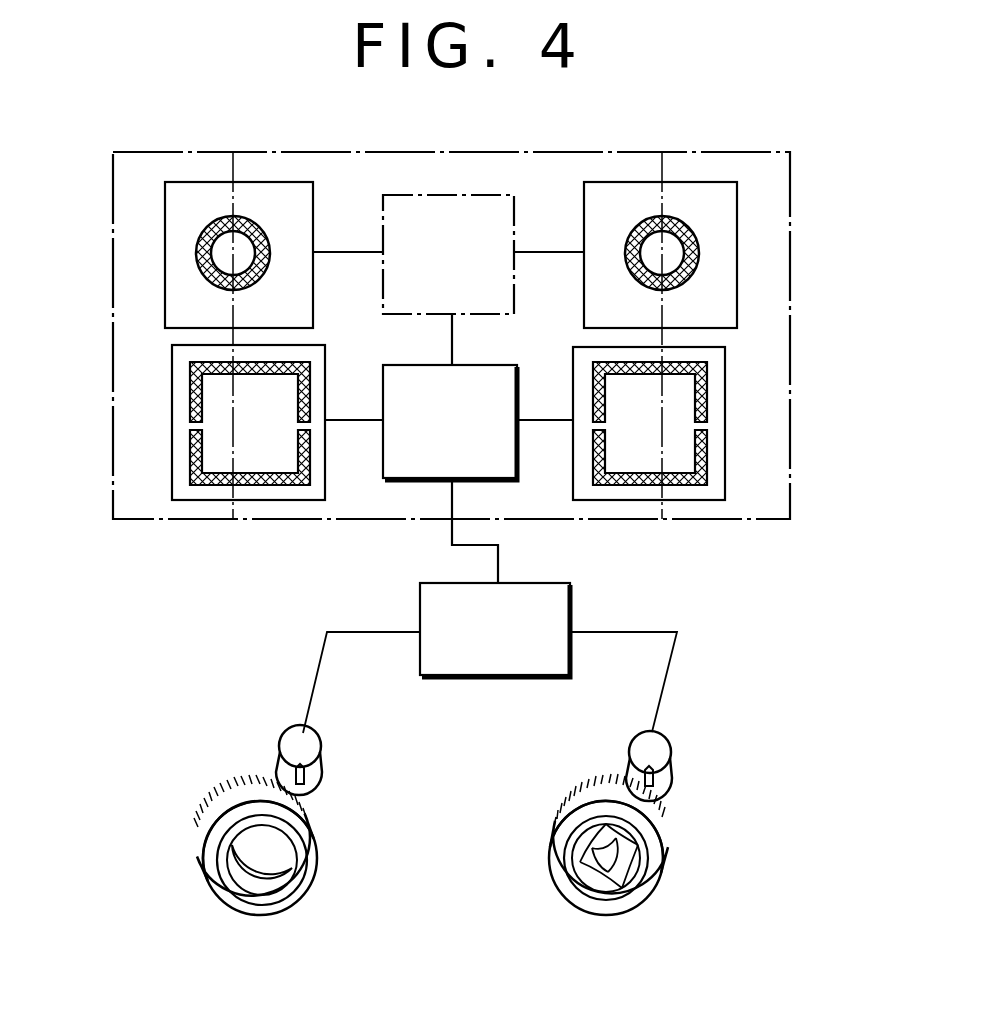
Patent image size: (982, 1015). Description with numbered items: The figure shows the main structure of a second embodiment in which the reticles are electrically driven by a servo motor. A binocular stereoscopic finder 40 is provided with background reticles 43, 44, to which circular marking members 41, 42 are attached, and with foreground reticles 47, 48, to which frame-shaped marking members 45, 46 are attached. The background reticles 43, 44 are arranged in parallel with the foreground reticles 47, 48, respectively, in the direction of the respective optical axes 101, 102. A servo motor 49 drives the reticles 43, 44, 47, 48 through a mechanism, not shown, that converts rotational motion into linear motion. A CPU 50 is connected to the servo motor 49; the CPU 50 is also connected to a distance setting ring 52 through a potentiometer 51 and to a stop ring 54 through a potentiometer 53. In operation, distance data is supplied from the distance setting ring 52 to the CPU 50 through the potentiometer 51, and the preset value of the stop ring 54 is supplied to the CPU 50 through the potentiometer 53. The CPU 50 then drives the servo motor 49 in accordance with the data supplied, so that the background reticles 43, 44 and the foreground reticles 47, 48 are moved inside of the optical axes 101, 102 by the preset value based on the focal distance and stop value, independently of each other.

The binocular stereoscopic finder 40 is at (728, 150).
The circular marking member 41 is at (262, 227).
The circular marking member 42 is at (632, 232).
The background reticle 43 is at (165, 210).
The background reticle 44 is at (737, 205).
The frame-shaped marking member 45 is at (310, 380).
The frame-shaped marking member 46 is at (593, 380).
The foreground reticle 47 is at (172, 368).
The foreground reticle 48 is at (725, 368).
The servo motor 49 is at (472, 339).
The CPU 50 is at (538, 582).
The potentiometer 51 is at (323, 757).
The distance setting ring 52 is at (320, 838).
The potentiometer 53 is at (673, 762).
The stop ring 54 is at (667, 840).
The optical axis 101 is at (233, 505).
The optical axis 102 is at (662, 505).